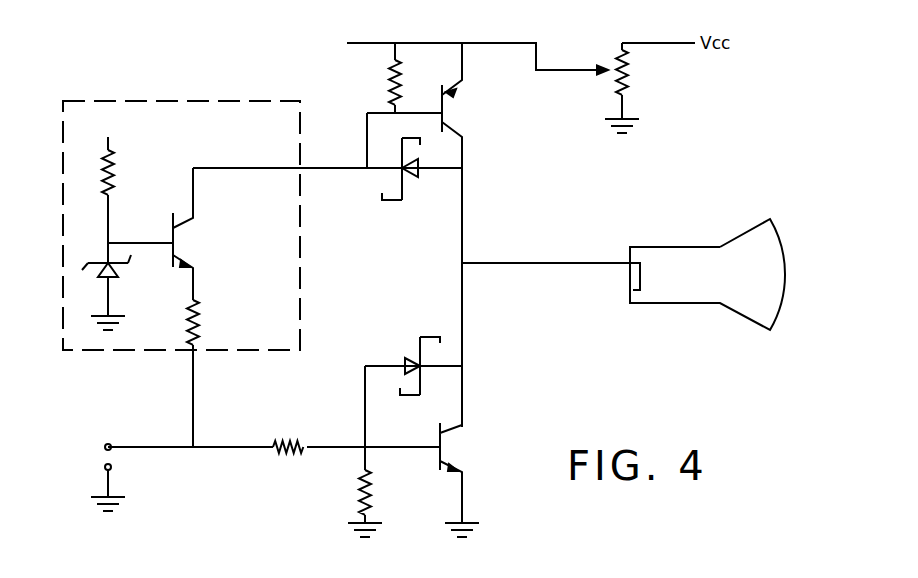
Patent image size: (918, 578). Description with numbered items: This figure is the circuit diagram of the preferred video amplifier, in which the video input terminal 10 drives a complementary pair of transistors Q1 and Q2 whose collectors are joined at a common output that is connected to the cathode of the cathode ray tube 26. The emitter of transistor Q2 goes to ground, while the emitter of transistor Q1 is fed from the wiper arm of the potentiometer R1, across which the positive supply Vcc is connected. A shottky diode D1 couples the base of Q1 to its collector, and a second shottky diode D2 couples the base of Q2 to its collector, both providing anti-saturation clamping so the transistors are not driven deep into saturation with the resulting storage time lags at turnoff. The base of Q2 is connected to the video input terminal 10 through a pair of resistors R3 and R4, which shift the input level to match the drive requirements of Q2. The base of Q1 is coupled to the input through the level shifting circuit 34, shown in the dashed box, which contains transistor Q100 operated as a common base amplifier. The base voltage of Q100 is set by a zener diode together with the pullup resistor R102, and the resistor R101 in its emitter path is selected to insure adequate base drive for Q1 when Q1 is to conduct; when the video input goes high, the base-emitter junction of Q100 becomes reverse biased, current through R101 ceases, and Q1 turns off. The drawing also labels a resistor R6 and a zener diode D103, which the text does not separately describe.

The video input terminal 10 is at (140, 447).
The cathode ray tube 26 is at (710, 303).
The level shifting circuit 34 is at (213, 101).
The potentiometer R1 is at (650, 88).
The resistor R3 is at (289, 434).
The resistor R4 is at (374, 492).
The resistor R6 is at (380, 78).
The transistor Q1 is at (464, 153).
The transistor Q2 is at (463, 451).
The shottky diode D1 is at (327, 170).
The shottky diode D2 is at (413, 364).
The resistor R101 is at (213, 373).
The pullup resistor R102 is at (129, 200).
The transistor Q100 is at (202, 234).
The zener diode D103 is at (119, 292).